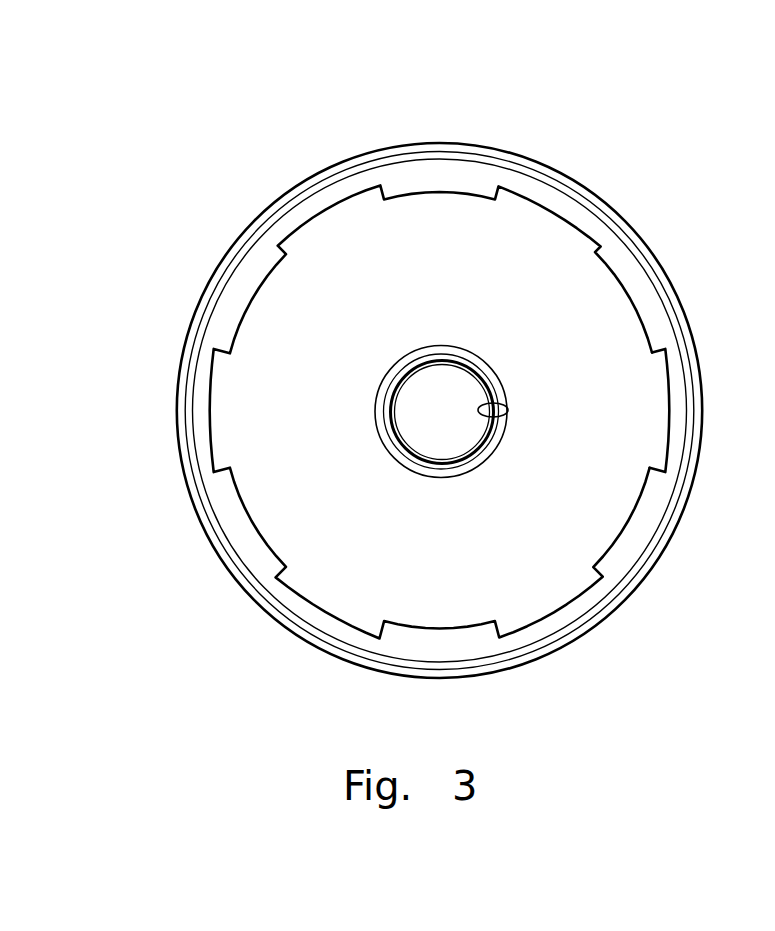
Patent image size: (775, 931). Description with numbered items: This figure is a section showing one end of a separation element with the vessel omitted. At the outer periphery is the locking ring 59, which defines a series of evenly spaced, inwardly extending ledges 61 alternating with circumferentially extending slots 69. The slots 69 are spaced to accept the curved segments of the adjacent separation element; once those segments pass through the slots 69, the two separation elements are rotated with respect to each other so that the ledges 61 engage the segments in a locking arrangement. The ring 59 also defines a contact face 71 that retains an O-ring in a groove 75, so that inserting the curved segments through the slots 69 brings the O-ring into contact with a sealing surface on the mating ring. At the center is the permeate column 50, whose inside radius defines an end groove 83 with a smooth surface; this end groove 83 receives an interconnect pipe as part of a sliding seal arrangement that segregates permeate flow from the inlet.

The permeate column 50 is at (470, 350).
The locking ring 59 is at (605, 202).
The ledges 61 is at (632, 292).
The slots 69 is at (660, 423).
The contact face 71 is at (470, 149).
The groove 75 is at (540, 168).
The end groove 83 is at (508, 412).